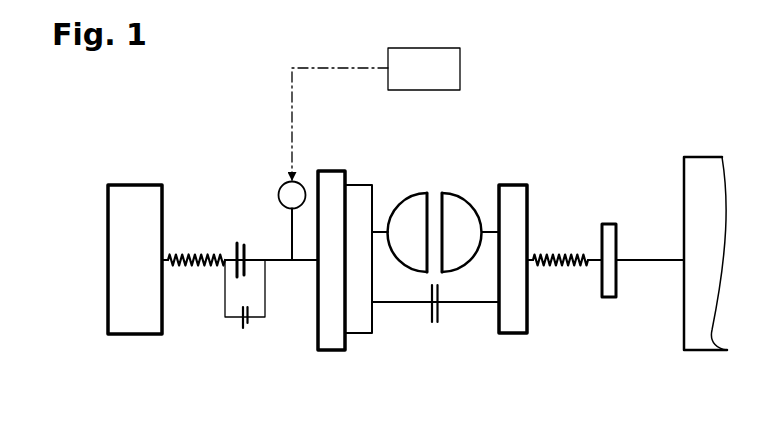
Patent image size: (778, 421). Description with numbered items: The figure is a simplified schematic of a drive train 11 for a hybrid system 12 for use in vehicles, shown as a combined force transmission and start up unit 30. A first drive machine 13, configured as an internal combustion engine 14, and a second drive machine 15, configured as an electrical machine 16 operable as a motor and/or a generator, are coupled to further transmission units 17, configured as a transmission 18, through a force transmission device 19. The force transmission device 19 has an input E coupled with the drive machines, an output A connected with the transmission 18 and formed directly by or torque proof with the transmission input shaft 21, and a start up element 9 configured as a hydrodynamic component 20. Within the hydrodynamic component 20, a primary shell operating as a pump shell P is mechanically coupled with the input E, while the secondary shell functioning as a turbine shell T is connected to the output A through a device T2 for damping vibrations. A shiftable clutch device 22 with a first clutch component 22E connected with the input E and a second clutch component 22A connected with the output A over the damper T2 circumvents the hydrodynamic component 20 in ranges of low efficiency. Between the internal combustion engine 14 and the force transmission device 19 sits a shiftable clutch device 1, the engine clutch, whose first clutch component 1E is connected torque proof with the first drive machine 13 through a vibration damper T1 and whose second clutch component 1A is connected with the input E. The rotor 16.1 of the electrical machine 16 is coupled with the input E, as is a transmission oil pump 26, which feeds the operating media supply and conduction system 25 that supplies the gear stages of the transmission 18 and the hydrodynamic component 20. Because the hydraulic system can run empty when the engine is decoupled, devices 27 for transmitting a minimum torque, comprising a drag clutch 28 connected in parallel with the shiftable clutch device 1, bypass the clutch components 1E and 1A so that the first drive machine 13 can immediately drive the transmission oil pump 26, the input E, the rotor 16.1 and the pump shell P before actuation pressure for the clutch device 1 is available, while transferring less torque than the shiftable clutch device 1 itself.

The shiftable clutch device 1 is at (212, 94).
The first drive machine 13 is at (87, 259).
The internal combustion engine 14 is at (118, 214).
The vibration damper T1 is at (177, 253).
The first clutch component 1E is at (237, 243).
The second clutch component 1A is at (244, 245).
The input E is at (277, 258).
The devices for transmitting a minimum torque 27 is at (274, 359).
The drag clutch 28 is at (247, 329).
The transmission oil pump 26 is at (294, 179).
The operating media supply and/or conduction system 25 is at (387, 67).
The combined force transmission and start up unit 30 is at (473, 93).
The drive train 11 is at (537, 184).
The hybrid system 12 is at (517, 93).
The second drive machine 15 is at (352, 230).
The electrical machine 16 is at (327, 171).
The rotor 16.1 is at (328, 322).
The start up element 9 is at (435, 191).
The hydrodynamic component 20 is at (435, 191).
The pump shell P is at (403, 233).
The turbine shell T is at (456, 233).
The force transmission device 19 is at (465, 173).
The shiftable clutch device 22 is at (406, 322).
The first clutch component 22E is at (433, 325).
The second clutch component 22A is at (439, 316).
The device for damping vibrations T2 is at (572, 253).
The output A is at (638, 258).
The transmission input shaft 21 is at (672, 258).
The transmission units 17 is at (715, 230).
The transmission 18 is at (699, 186).